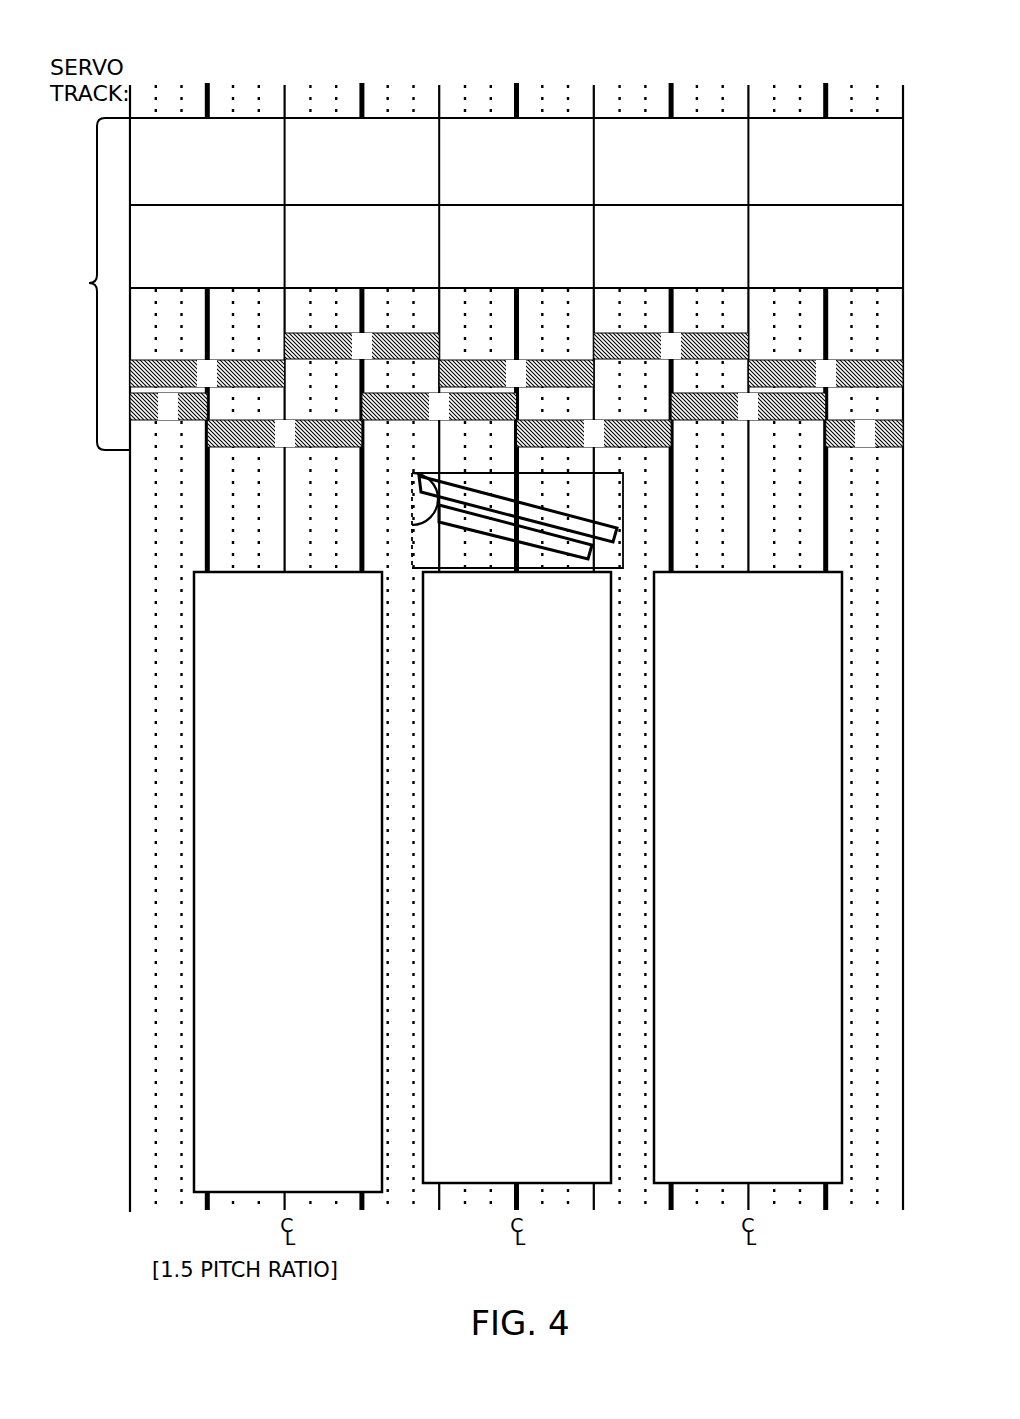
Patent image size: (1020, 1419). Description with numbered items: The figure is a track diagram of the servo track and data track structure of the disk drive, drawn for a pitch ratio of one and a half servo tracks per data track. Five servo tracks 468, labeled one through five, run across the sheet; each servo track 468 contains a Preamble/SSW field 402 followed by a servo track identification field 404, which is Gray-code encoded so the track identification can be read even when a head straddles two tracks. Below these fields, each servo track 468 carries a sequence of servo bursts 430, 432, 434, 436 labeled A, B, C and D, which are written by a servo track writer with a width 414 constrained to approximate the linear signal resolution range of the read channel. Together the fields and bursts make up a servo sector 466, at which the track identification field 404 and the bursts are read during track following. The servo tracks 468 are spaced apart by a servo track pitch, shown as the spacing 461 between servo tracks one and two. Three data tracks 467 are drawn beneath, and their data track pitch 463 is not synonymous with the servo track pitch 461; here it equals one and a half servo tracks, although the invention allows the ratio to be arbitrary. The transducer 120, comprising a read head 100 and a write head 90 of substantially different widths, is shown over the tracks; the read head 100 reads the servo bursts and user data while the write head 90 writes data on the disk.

The write head 90 is at (618, 534).
The read head 100 is at (414, 522).
The transducer 120 is at (517, 466).
The Preamble/SSW field 402 is at (843, 199).
The servo track identification field 404 is at (843, 286).
The width 414 is at (207, 468).
The servo burst 430 is at (641, 360).
The servo burst 432 is at (545, 361).
The servo burst 434 is at (756, 422).
The servo burst 436 is at (648, 448).
The servo track pitch 461 is at (671, 18).
The data track pitch 463 is at (517, 1248).
The servo sector 466 is at (84, 284).
The data tracks 467 is at (765, 751).
The servo track 468 is at (163, 66).